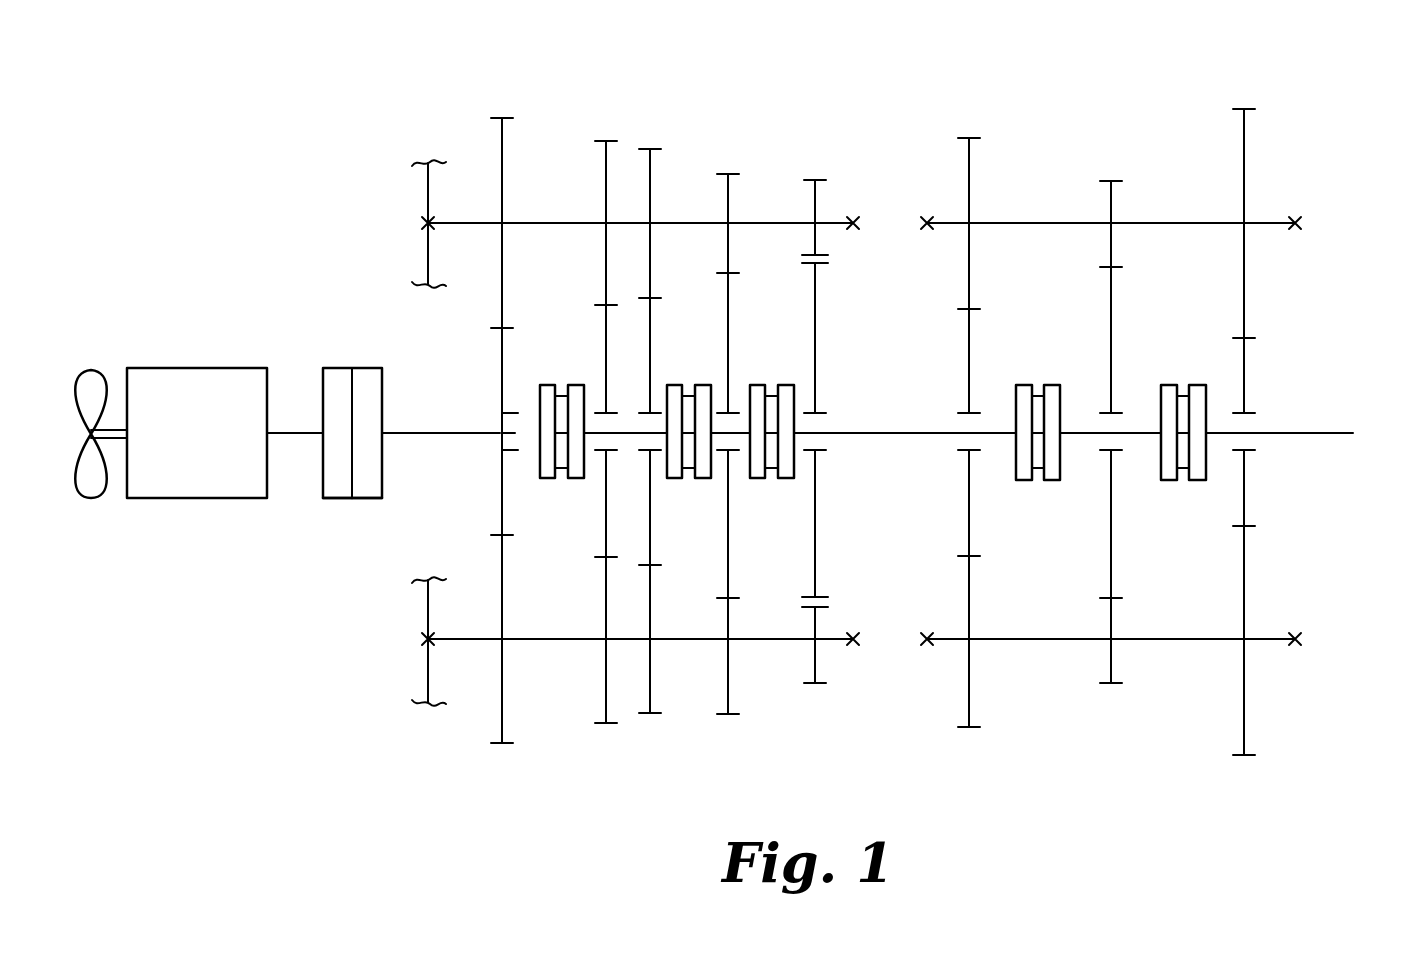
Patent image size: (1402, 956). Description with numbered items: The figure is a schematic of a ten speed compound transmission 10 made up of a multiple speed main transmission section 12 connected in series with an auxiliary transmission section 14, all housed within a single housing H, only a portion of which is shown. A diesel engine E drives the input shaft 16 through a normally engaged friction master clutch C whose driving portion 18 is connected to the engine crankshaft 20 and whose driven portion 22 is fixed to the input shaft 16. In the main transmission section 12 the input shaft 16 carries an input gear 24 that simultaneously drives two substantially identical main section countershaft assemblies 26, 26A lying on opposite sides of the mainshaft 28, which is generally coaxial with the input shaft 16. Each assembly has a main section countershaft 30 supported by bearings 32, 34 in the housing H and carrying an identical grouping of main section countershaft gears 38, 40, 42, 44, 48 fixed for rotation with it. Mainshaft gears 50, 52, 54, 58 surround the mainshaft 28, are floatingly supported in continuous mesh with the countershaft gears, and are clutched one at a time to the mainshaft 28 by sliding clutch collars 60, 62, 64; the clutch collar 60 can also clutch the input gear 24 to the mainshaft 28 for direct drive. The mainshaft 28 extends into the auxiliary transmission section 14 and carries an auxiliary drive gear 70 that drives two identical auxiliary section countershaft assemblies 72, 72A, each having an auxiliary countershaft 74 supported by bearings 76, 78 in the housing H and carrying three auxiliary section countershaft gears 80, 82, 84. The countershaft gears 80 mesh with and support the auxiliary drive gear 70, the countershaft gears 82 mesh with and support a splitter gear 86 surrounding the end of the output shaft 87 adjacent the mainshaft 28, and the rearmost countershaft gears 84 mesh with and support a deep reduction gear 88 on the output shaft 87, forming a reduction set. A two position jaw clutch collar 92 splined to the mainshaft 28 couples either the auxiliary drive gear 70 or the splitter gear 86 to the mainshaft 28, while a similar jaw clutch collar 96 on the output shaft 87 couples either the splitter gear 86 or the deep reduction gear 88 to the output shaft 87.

The compound transmission 10 is at (553, 775).
The main transmission section 12 is at (759, 96).
The auxiliary transmission section 14 is at (1097, 100).
The input shaft 16 is at (442, 428).
The driving portion 18 is at (337, 492).
The engine crankshaft 20 is at (297, 427).
The driven portion 22 is at (364, 492).
The input gear 24 is at (500, 472).
The main section countershaft assembly 26 is at (760, 222).
The main section countershaft assembly 26A is at (537, 638).
The mainshaft 28 is at (896, 430).
The main section countershaft 30 is at (542, 226).
The bearing 32 is at (425, 222).
The bearing 34 is at (854, 218).
The main section countershaft gear 38 is at (500, 134).
The main section countershaft gear 40 is at (604, 170).
The main section countershaft gear 42 is at (652, 170).
The main section countershaft gear 44 is at (726, 237).
The main section countershaft gear 48 is at (817, 245).
The mainshaft gear 50 is at (604, 350).
The mainshaft gear 52 is at (652, 326).
The mainshaft gear 54 is at (726, 352).
The mainshaft gear 58 is at (813, 550).
The sliding clutch collar 60 is at (547, 480).
The sliding clutch collar 62 is at (674, 480).
The sliding clutch collar 64 is at (756, 382).
The auxiliary drive gear 70 is at (967, 507).
The auxiliary section countershaft assembly 72 is at (1190, 222).
The auxiliary section countershaft assembly 72A is at (1175, 638).
The auxiliary countershaft 74 is at (1040, 226).
The bearing 76 is at (1302, 226).
The bearing 78 is at (927, 218).
The auxiliary section countershaft gear 80 is at (971, 160).
The auxiliary section countershaft gear 82 is at (1110, 192).
The auxiliary section countershaft gear 84 is at (1246, 134).
The splitter gear 86 is at (1113, 292).
The output shaft 87 is at (1330, 430).
The deep reduction gear 88 is at (1246, 368).
The sliding two position jaw clutch collar 92 is at (1026, 382).
The sliding two position jaw clutch collar 96 is at (1170, 382).
The diesel engine E is at (171, 433).
The friction master clutch C is at (342, 366).
The housing H is at (426, 181).